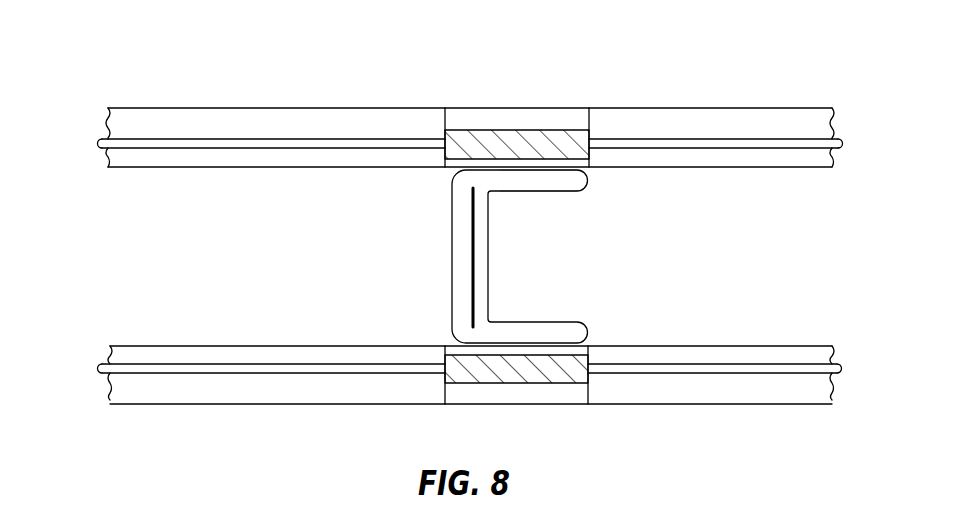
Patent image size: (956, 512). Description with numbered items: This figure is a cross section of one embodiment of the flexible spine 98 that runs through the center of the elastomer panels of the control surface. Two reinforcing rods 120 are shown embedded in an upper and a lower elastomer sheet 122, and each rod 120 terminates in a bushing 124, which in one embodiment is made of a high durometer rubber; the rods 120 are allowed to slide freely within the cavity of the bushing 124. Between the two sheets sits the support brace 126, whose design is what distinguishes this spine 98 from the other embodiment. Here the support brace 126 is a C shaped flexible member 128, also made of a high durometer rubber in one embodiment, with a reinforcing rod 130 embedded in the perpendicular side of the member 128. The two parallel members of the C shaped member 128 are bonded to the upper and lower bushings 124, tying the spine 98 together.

The flexible spine 98 is at (543, 46).
The reinforcing rod 120 is at (102, 140).
The elastomer sheet 122 is at (347, 118).
The bushing 124 is at (486, 137).
The support brace 126 is at (655, 228).
The C shaped flexible member 128 is at (518, 185).
The reinforcing rod 130 is at (471, 243).